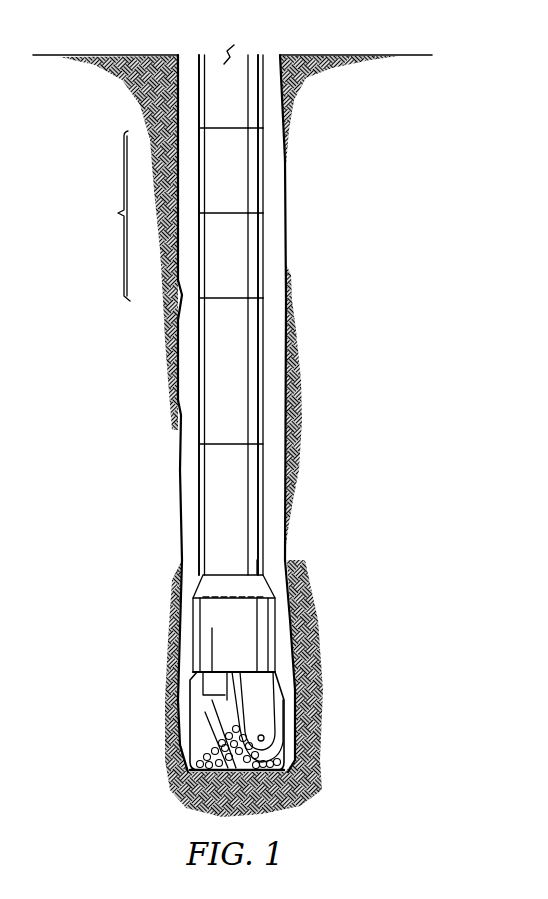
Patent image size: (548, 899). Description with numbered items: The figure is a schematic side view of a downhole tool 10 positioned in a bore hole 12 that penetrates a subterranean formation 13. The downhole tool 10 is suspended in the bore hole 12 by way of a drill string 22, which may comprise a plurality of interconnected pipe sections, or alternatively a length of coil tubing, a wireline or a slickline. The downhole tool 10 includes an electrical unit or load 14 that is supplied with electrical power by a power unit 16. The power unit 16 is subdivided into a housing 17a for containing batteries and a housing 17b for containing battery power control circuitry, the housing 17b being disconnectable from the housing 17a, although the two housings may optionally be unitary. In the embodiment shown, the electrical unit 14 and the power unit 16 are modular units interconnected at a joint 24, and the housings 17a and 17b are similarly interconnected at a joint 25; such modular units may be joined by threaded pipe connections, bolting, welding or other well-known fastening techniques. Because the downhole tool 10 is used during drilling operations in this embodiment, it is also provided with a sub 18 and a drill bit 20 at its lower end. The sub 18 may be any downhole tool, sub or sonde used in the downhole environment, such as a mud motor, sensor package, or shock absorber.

The downhole tool 10 is at (414, 197).
The bore hole 12 is at (192, 471).
The subterranean formation 13 is at (312, 698).
The electrical unit 14 is at (216, 315).
The power unit 16 is at (109, 216).
The housing 17a is at (238, 172).
The housing 17b is at (238, 256).
The sub 18 is at (213, 518).
The drill bit 20 is at (197, 722).
The drill string 22 is at (213, 63).
The joint 24 is at (238, 304).
The joint 25 is at (240, 206).